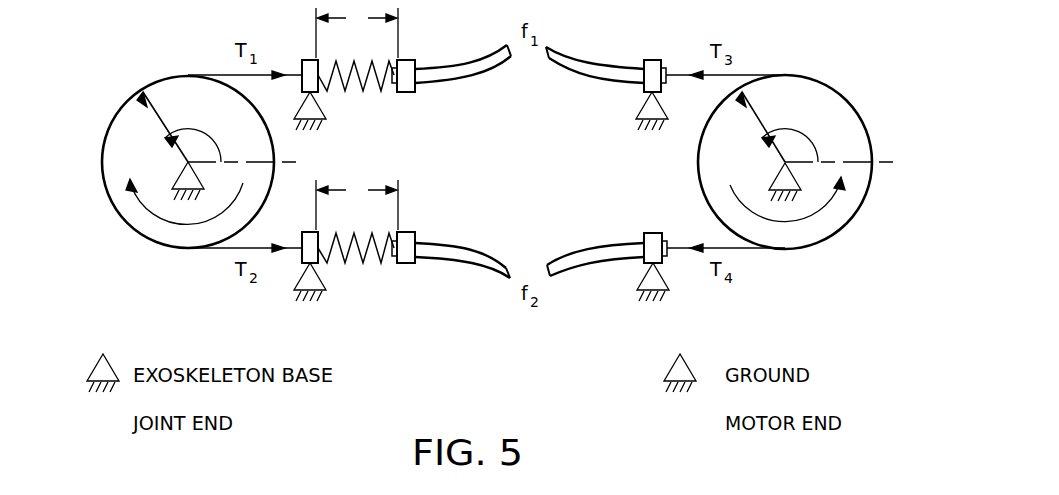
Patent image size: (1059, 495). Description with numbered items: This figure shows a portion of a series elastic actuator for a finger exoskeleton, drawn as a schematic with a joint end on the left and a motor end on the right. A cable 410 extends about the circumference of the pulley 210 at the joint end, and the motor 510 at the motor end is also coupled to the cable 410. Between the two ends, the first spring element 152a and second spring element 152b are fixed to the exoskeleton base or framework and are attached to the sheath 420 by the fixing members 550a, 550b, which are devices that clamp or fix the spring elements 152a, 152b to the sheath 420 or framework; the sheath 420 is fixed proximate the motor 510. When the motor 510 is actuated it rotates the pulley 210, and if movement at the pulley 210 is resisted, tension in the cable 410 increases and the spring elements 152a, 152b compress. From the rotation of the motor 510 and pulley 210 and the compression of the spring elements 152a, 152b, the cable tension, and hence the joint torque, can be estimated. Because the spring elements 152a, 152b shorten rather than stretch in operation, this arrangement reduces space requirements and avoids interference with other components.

The pulley 210 is at (101, 163).
The motor 510 is at (814, 77).
The spring element 152a is at (366, 84).
The spring element 152b is at (366, 257).
The fixing member 550a is at (404, 60).
The fixing member 550b is at (404, 232).
The sheath 420 is at (493, 68).
The cable 410 is at (296, 252).